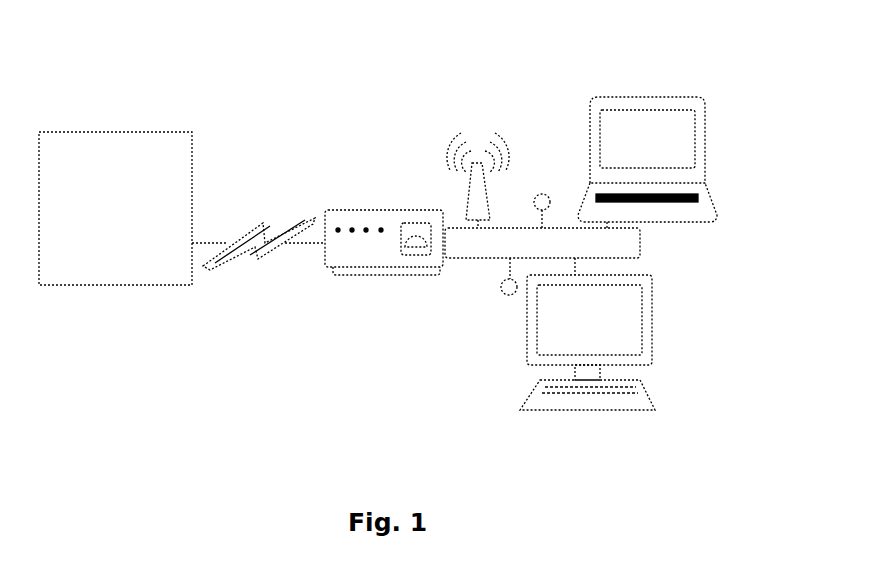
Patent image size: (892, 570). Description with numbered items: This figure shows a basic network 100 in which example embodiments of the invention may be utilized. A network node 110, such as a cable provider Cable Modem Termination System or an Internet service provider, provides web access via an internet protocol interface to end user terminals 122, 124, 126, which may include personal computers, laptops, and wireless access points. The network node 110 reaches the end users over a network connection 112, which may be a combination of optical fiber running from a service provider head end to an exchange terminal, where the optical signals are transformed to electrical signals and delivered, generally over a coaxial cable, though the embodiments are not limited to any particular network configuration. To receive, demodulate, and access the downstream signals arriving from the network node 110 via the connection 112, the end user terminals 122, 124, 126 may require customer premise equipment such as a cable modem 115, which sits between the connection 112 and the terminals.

The basic network 100 is at (695, 49).
The network node 110 is at (115, 208).
The network connection 112 is at (292, 247).
The cable modem 115 is at (384, 230).
The end user terminal 122 is at (587, 342).
The end user terminal 124 is at (647, 159).
The end user terminal 126 is at (497, 197).